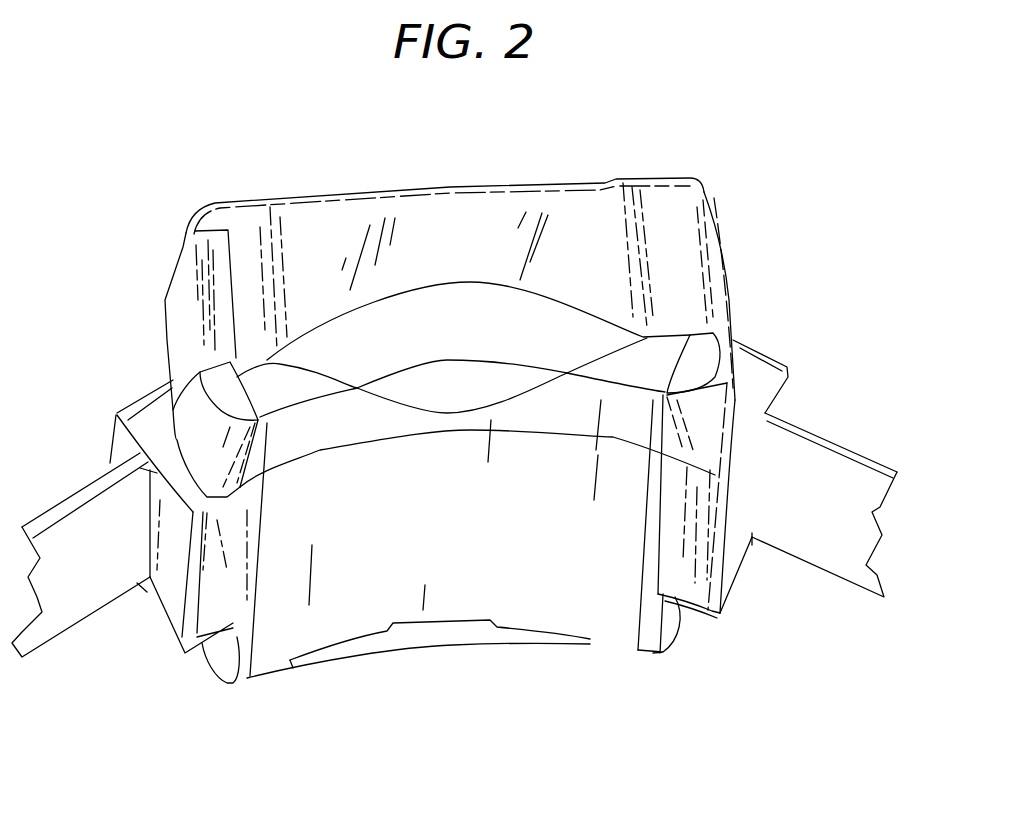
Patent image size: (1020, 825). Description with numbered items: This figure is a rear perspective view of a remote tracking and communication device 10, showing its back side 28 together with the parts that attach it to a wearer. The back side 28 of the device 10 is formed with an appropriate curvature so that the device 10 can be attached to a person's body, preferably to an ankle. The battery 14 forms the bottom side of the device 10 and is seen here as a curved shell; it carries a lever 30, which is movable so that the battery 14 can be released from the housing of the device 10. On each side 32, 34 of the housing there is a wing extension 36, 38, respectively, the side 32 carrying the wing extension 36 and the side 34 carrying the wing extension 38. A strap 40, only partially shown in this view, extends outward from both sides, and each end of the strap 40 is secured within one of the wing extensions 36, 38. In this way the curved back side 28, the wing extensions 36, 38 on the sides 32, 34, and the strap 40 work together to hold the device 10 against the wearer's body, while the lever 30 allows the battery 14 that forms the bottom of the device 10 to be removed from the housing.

The device 10 is at (728, 105).
The battery 14 is at (698, 184).
The back side 28 is at (595, 625).
The lever 30 is at (183, 287).
The side 32 is at (212, 667).
The side 34 is at (678, 633).
The wing extension 36 is at (140, 410).
The wing extension 38 is at (760, 370).
The strap 40 is at (853, 477).